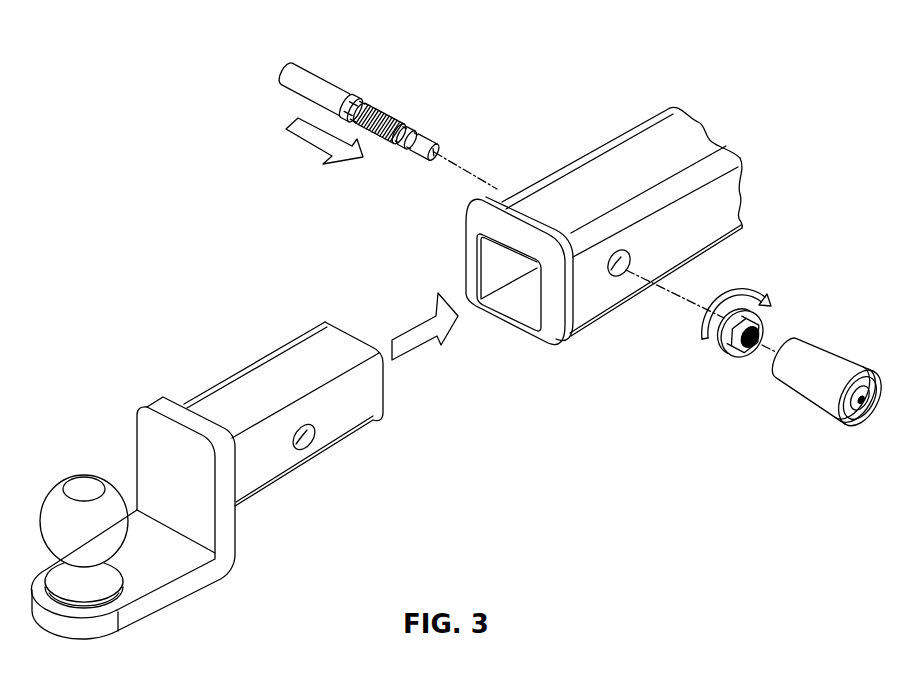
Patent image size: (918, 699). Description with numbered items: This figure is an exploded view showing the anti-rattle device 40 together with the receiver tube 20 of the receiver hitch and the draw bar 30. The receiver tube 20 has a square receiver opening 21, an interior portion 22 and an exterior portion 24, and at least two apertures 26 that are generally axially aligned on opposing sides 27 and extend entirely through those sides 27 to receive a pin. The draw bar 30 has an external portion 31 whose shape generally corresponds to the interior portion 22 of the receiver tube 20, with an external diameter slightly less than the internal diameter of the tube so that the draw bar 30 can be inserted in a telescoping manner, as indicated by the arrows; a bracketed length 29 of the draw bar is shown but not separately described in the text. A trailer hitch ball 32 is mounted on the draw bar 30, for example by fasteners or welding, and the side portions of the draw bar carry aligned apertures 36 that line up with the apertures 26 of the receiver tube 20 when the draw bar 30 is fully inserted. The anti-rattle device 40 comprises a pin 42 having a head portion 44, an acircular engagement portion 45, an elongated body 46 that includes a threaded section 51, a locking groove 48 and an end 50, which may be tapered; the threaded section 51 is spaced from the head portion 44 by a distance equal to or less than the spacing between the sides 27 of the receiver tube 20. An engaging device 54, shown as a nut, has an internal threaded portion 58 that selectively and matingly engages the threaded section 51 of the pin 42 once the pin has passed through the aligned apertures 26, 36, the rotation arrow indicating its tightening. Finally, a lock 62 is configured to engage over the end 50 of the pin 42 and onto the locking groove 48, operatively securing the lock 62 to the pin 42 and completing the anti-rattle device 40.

The receiver tube 20 is at (599, 236).
The receiver opening 21 is at (478, 257).
The interior portion 22 is at (520, 308).
The exterior portion 24 is at (690, 143).
The apertures 26 is at (622, 273).
The sides 27 is at (728, 201).
The ball mount bracket 29 is at (461, 463).
The draw bar 30 is at (246, 487).
The external portion 31 is at (283, 415).
The trailer hitch ball 32 is at (60, 490).
The apertures 36 is at (311, 446).
The anti-rattle device 40 is at (278, 148).
The pin 42 is at (376, 124).
The head portion 44 is at (298, 75).
The acircular engagement portion 45 is at (352, 95).
The elongated body 46 is at (379, 135).
The locking groove 48 is at (410, 141).
The end 50 is at (434, 151).
The threaded section 51 is at (381, 138).
The engaging device 54 is at (749, 365).
The internal threaded portion 58 is at (757, 353).
The lock 62 is at (833, 368).